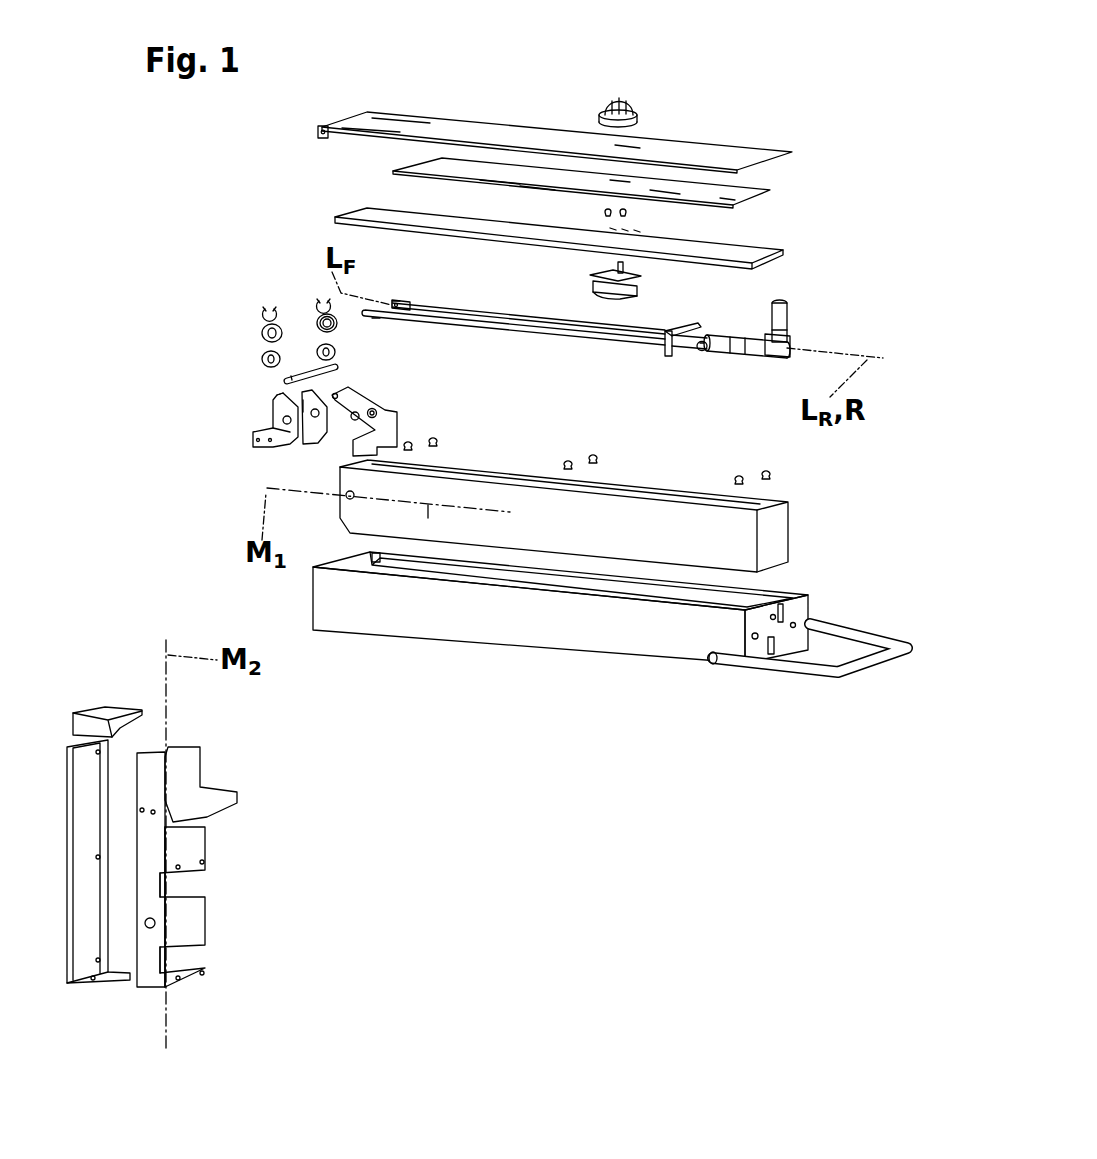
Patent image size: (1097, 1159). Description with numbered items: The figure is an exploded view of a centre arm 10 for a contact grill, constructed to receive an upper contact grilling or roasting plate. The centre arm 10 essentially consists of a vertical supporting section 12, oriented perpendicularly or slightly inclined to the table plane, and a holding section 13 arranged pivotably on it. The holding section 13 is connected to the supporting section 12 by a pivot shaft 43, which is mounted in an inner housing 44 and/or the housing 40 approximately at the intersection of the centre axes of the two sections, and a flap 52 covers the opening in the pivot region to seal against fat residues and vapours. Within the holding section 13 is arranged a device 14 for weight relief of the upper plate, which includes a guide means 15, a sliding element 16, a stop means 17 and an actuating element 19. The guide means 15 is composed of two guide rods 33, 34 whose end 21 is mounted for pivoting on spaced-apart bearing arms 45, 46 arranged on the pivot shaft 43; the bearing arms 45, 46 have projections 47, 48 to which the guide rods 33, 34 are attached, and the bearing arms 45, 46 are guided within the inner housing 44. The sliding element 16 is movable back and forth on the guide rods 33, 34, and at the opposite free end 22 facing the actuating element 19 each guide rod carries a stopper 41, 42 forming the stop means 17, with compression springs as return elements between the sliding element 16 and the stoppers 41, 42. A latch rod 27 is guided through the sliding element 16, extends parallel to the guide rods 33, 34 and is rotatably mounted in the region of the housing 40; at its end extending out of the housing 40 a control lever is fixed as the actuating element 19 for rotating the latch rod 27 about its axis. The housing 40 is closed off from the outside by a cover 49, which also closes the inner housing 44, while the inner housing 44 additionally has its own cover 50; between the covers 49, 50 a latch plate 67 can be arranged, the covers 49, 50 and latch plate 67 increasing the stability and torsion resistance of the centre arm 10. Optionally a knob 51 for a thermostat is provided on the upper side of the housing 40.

The centre arm 10 is at (152, 378).
The vertical supporting section 12 is at (60, 860).
The holding section 13 is at (832, 458).
The device for weight relief 14 is at (800, 328).
The guide means 15 is at (482, 303).
The sliding element 16 is at (668, 360).
The stop means 17 is at (703, 360).
The actuating element 19 is at (787, 315).
The end of the guide means 21 is at (397, 300).
The end of the guide means opposite the mounting 22 is at (740, 337).
The latch rod 27 is at (757, 348).
The guide rod 33 is at (507, 323).
The guide rod 34 is at (513, 318).
The housing 40 is at (678, 637).
The stopper 41 is at (697, 348).
The stopper 42 is at (732, 336).
The pivot shaft 43 is at (308, 377).
The inner housing 44 is at (630, 528).
The bearing arm 45 is at (283, 443).
The bearing arm 46 is at (312, 437).
The projection 47 is at (277, 396).
The projection 48 is at (310, 390).
The cover 49 is at (517, 137).
The cover 50 is at (757, 243).
The knob 51 is at (620, 96).
The flap 52 is at (105, 710).
The latch plate 67 is at (467, 170).